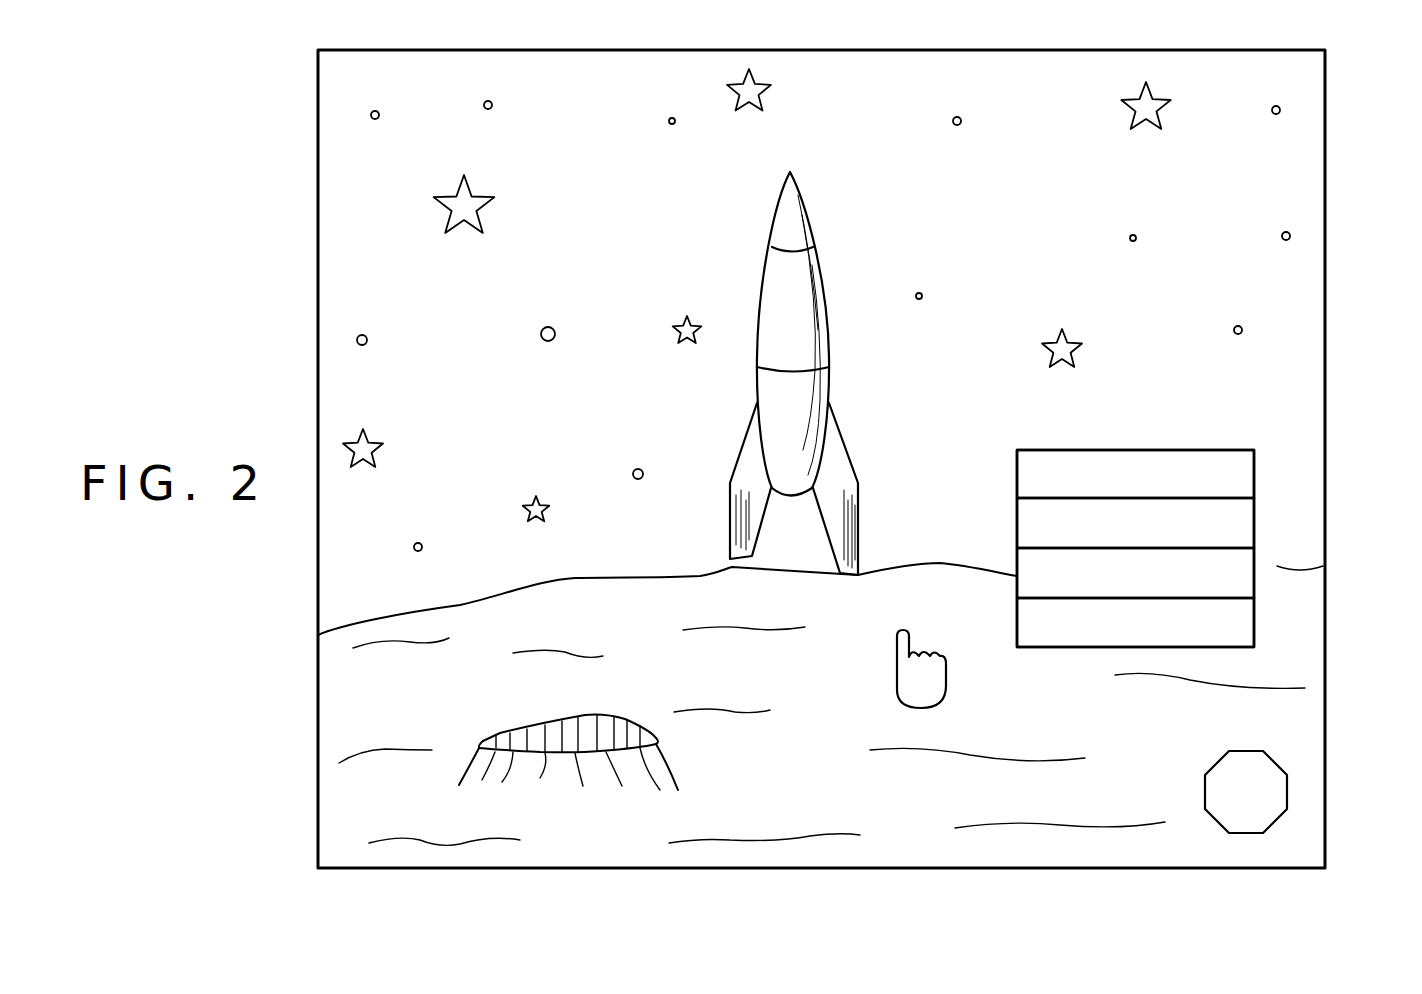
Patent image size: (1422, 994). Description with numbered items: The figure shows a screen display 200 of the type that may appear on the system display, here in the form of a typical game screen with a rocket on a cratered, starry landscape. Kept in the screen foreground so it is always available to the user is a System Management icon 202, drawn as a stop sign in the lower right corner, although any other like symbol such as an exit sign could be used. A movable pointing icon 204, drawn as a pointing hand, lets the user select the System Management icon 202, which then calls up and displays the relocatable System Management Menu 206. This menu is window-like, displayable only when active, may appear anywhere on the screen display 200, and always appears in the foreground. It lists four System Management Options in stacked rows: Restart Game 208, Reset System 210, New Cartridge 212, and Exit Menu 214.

The screen display 200 is at (290, 129).
The System Management icon 202 is at (1266, 762).
The movable pointing icon 204 is at (930, 680).
The System Management Menu 206 is at (1206, 515).
The Restart Game option 208 is at (1243, 478).
The Reset System option 210 is at (1243, 527).
The New Cartridge option 212 is at (1243, 577).
The Exit Menu option 214 is at (1243, 627).